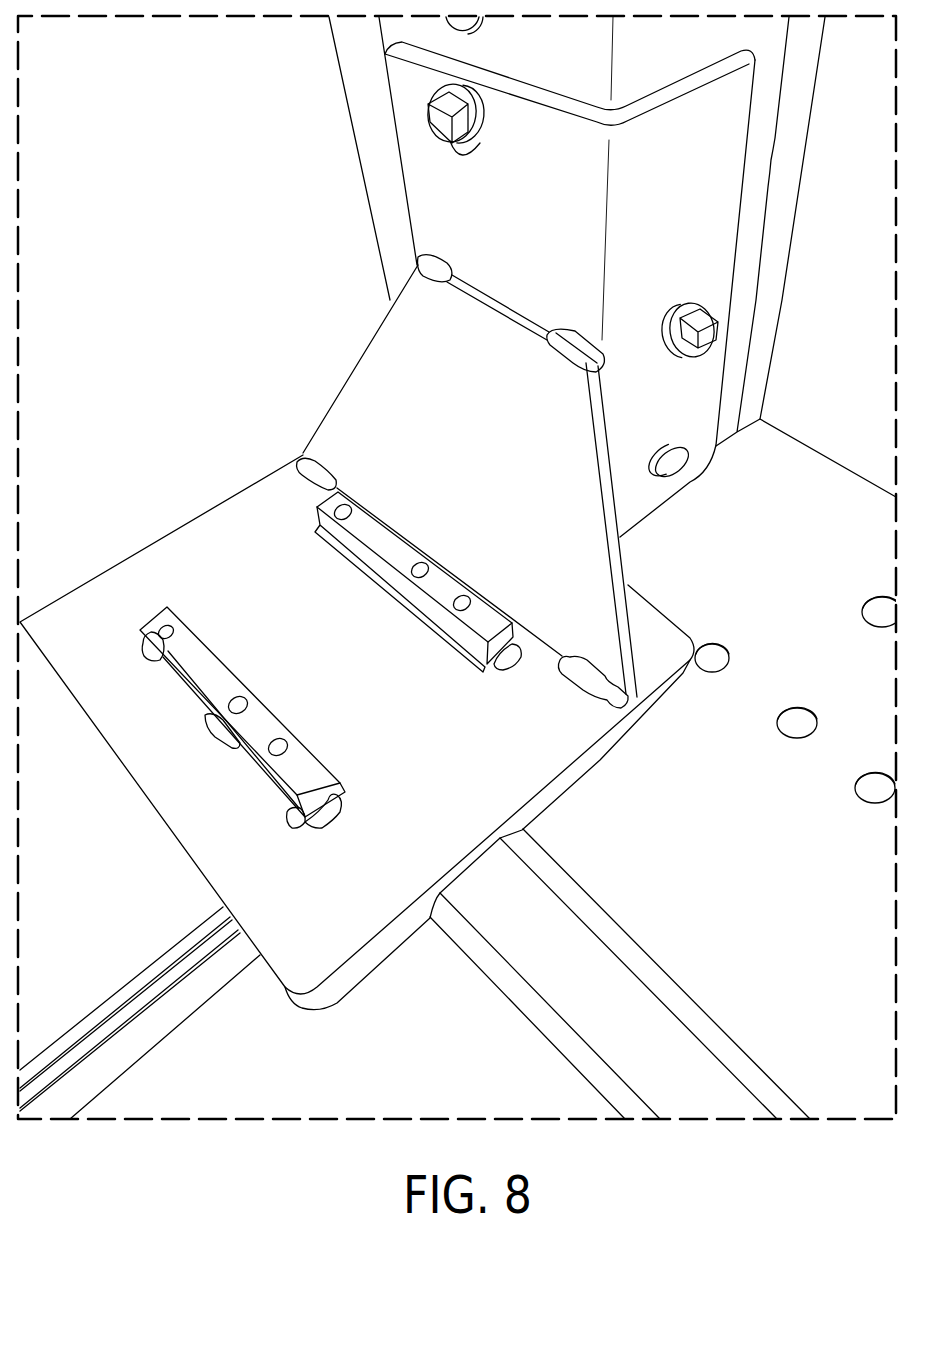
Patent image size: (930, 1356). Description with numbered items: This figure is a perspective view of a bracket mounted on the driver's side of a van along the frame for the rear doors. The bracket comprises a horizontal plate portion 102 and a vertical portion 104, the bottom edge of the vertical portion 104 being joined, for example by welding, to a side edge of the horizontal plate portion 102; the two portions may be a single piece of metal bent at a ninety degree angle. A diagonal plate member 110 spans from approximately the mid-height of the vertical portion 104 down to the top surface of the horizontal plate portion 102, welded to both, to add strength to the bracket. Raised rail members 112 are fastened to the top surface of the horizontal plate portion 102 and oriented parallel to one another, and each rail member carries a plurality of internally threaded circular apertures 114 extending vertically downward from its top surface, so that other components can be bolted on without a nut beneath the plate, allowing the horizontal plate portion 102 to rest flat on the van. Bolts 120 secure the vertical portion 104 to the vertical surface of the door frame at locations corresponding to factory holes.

The horizontal plate portion 102 is at (213, 557).
The vertical portion 104 is at (457, 197).
The diagonal plate member 110 is at (410, 388).
The raised rail members 112 is at (330, 520).
The circular bores or apertures 114 is at (232, 706).
The bolts 120 is at (446, 118).